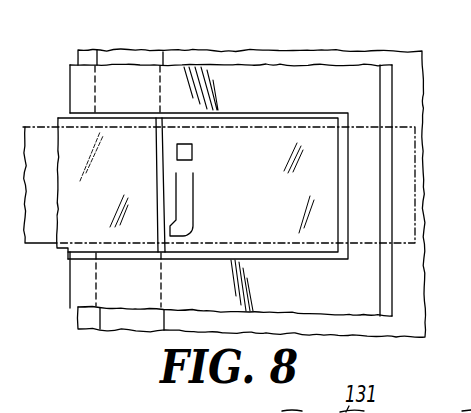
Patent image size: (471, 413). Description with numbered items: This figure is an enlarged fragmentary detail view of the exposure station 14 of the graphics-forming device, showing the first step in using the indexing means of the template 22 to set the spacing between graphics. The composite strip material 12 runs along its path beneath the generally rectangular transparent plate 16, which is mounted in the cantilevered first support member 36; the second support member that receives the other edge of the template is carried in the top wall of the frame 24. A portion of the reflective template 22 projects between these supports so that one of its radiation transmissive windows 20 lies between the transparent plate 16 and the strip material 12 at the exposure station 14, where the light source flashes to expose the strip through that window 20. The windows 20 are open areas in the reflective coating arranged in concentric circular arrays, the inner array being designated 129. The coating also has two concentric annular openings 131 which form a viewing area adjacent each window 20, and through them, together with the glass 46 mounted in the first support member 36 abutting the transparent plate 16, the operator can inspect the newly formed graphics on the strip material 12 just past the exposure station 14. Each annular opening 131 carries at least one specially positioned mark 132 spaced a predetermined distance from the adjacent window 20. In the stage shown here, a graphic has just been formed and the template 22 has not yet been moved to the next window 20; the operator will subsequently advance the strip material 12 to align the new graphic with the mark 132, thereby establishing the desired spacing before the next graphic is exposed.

The composite strip material 12 is at (35, 135).
The exposure station 14 is at (256, 128).
The transparent plate 16 is at (276, 143).
The radiation transmissive window 20 is at (181, 231).
The template 22 is at (424, 66).
The frame 24 is at (366, 6).
The first support member 36 is at (352, 75).
The glass 46 is at (122, 143).
The inner circular array 129 is at (204, 152).
The annular opening 131 is at (131, 62).
The mark 132 is at (120, 237).